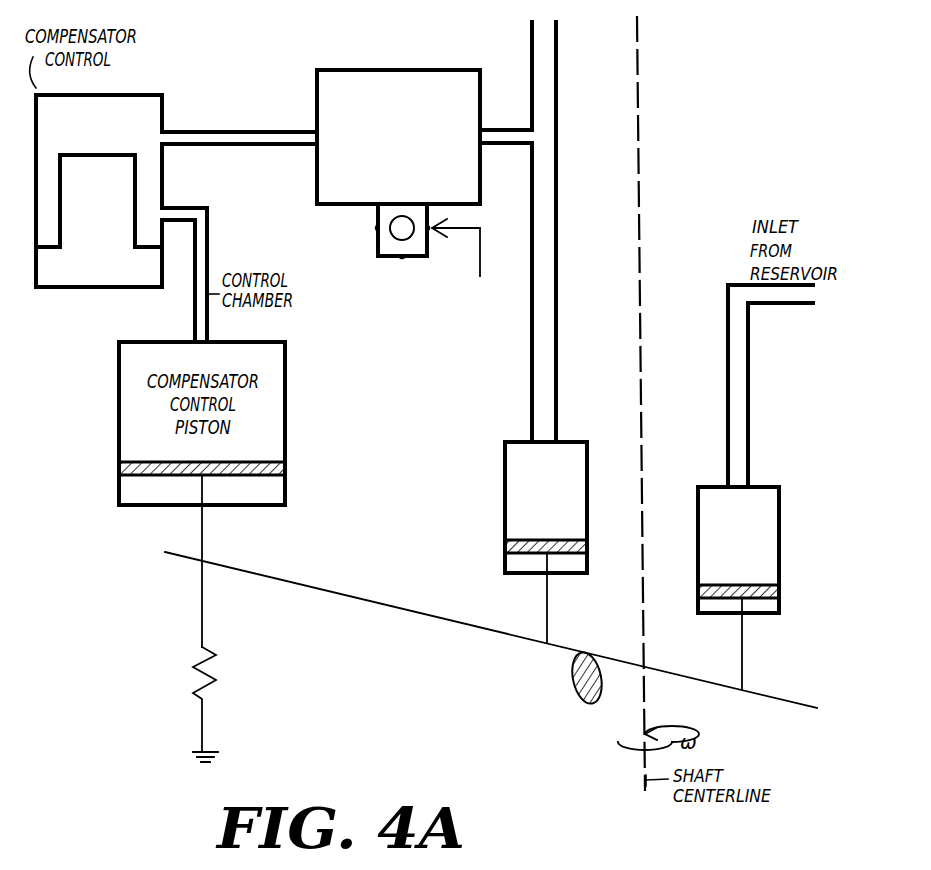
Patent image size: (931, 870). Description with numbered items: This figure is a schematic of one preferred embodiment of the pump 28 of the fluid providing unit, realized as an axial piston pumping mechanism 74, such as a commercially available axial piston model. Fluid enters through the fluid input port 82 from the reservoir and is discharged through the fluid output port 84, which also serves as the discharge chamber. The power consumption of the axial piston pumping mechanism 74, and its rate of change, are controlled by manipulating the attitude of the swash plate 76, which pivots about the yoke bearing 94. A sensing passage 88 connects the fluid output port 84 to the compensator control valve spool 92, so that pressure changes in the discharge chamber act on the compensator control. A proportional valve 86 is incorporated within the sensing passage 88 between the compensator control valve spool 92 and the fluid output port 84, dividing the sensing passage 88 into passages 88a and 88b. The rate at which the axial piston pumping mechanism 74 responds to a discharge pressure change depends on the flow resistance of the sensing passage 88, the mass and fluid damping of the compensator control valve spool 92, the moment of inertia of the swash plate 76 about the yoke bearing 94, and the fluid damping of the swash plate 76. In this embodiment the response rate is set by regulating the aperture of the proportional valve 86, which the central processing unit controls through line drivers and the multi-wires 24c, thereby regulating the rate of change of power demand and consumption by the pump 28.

The pump 28 is at (719, 101).
The axial piston pumping mechanism 74 is at (656, 63).
The swash plate 76 is at (323, 588).
The fluid input port 82 is at (733, 284).
The fluid output port 84 is at (557, 65).
The proportional valve 86 is at (388, 70).
The sensing passage 88 is at (347, 92).
The passage 88a is at (221, 148).
The passage 88b is at (503, 130).
The compensator control valve spool 92 is at (100, 180).
The yoke bearing 94 is at (572, 683).
The multi-wires 24c is at (480, 276).